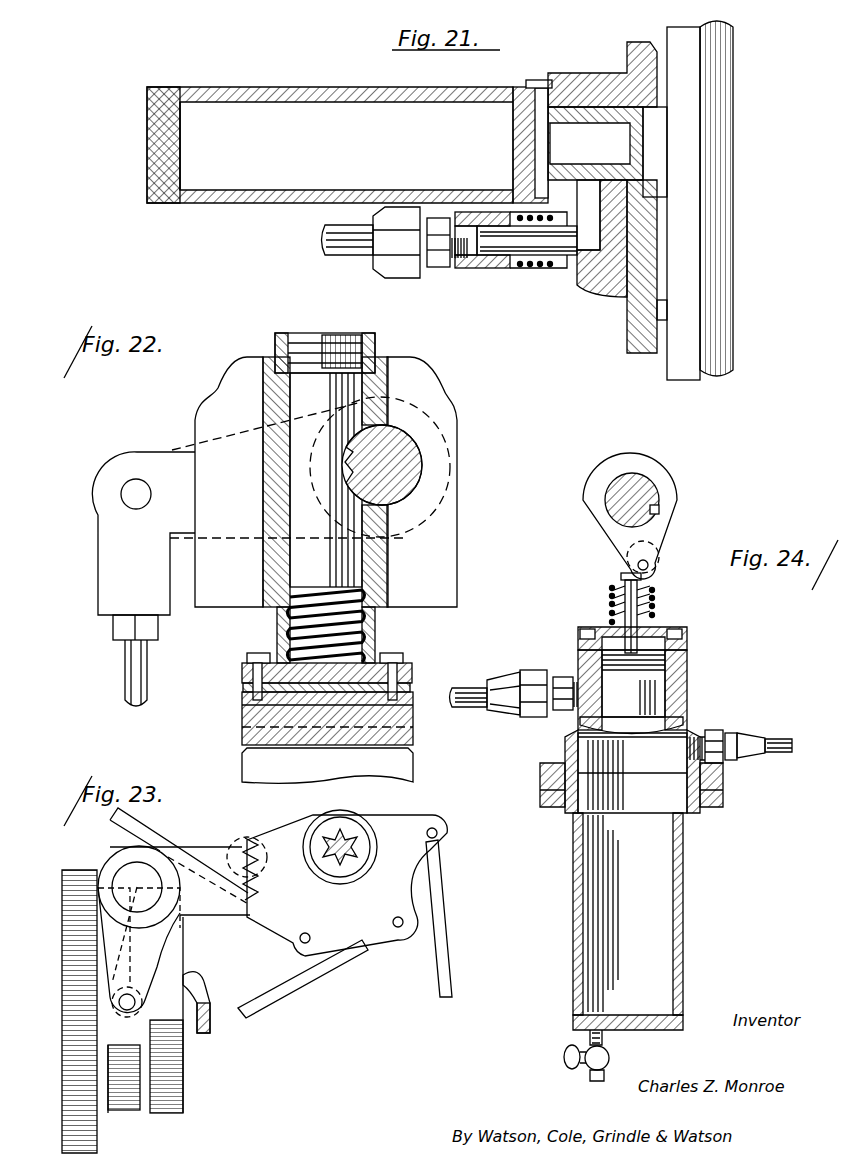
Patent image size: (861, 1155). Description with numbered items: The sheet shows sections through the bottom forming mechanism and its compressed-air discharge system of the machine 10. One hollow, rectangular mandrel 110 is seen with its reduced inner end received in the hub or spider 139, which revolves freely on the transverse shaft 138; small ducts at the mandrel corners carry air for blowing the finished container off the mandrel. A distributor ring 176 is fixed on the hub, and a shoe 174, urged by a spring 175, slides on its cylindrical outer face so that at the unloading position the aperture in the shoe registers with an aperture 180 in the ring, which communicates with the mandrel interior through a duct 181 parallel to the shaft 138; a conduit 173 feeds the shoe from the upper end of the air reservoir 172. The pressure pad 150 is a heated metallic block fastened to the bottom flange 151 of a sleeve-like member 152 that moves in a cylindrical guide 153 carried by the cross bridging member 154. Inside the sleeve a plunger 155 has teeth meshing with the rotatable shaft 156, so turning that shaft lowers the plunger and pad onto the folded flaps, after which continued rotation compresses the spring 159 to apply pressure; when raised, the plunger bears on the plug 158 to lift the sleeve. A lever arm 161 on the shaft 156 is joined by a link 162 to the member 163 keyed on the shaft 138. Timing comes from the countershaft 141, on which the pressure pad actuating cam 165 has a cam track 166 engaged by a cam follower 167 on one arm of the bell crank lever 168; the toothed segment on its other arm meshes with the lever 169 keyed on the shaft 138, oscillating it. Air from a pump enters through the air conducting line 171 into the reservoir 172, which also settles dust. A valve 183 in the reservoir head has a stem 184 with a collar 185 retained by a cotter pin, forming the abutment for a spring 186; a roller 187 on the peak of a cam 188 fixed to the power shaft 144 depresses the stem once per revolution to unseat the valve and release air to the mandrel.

In FIG. 21, the tube 10 is at (308, 88).
In FIG. 21, the mandrel 110 is at (362, 79).
In FIG. 22, the mandrel 110 is at (407, 773).
In FIG. 21, the hub or spider 139 is at (582, 90).
In FIG. 21, the duct 181 is at (584, 185).
In FIG. 21, the distributor ring 176 is at (604, 284).
In FIG. 21, the shaft 138 is at (722, 75).
In FIG. 23, the shaft 138 is at (347, 862).
In FIG. 21, the conduit 173 is at (326, 238).
In FIG. 24, the conduit 173 is at (471, 685).
In FIG. 21, the shoe 174 is at (556, 264).
In FIG. 21, the spring 175 is at (526, 268).
In FIG. 21, the aperture 180 is at (587, 236).
In FIG. 22, the cross bridging member 154 is at (443, 396).
In FIG. 22, the lever arm 161 is at (174, 458).
In FIG. 22, the link 162 is at (130, 668).
In FIG. 23, the link 162 is at (440, 963).
In FIG. 22, the cylindrical guide 153 is at (388, 556).
In FIG. 22, the spring 159 is at (297, 620).
In FIG. 22, the sleeve-like member 152 is at (375, 627).
In FIG. 22, the plug 158 is at (352, 335).
In FIG. 22, the plunger 155 is at (297, 490).
In FIG. 22, the rotatable shaft 156 is at (410, 462).
In FIG. 22, the bottom flange 151 is at (242, 673).
In FIG. 22, the pressure pad 150 is at (242, 708).
In FIG. 23, the cam track 166 is at (110, 1100).
In FIG. 23, the bell crank lever 168 is at (150, 953).
In FIG. 23, the lever 169 is at (280, 843).
In FIG. 23, the pressure pad actuating cam 165 is at (183, 1073).
In FIG. 23, the cam follower 167 is at (130, 1017).
In FIG. 23, the countershaft 141 is at (200, 1022).
In FIG. 23, the member 163 is at (397, 878).
In FIG. 24, the cam 188 is at (666, 521).
In FIG. 24, the power shaft 144 is at (652, 484).
In FIG. 24, the roller 187 is at (660, 567).
In FIG. 24, the collar 185 is at (651, 588).
In FIG. 24, the stem 184 is at (626, 612).
In FIG. 24, the spring 186 is at (655, 618).
In FIG. 24, the valve 183 is at (648, 694).
In FIG. 24, the air conducting line 171 is at (766, 742).
In FIG. 24, the air reservoir 172 is at (678, 843).